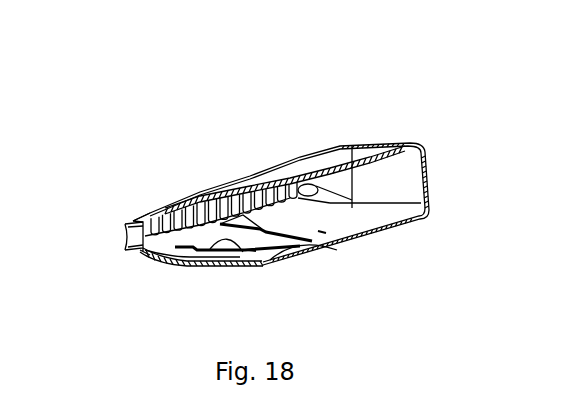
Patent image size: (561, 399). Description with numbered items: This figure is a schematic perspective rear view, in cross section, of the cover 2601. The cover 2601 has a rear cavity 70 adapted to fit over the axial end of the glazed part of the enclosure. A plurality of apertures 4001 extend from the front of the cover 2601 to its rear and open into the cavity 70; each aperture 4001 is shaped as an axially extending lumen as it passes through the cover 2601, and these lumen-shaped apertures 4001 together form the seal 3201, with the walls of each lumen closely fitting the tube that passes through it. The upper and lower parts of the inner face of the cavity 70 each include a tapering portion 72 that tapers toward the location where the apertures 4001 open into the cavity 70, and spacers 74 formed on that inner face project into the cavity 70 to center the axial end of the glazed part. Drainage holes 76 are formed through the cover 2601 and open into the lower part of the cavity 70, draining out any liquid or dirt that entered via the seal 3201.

The cover 2601 is at (322, 163).
The rear cavity 70 is at (396, 194).
The tapering portion 72 is at (190, 210).
The spacers 74 is at (253, 262).
The drainage holes 76 is at (360, 230).
The apertures 4001 is at (124, 237).
The seal 3201 is at (123, 254).